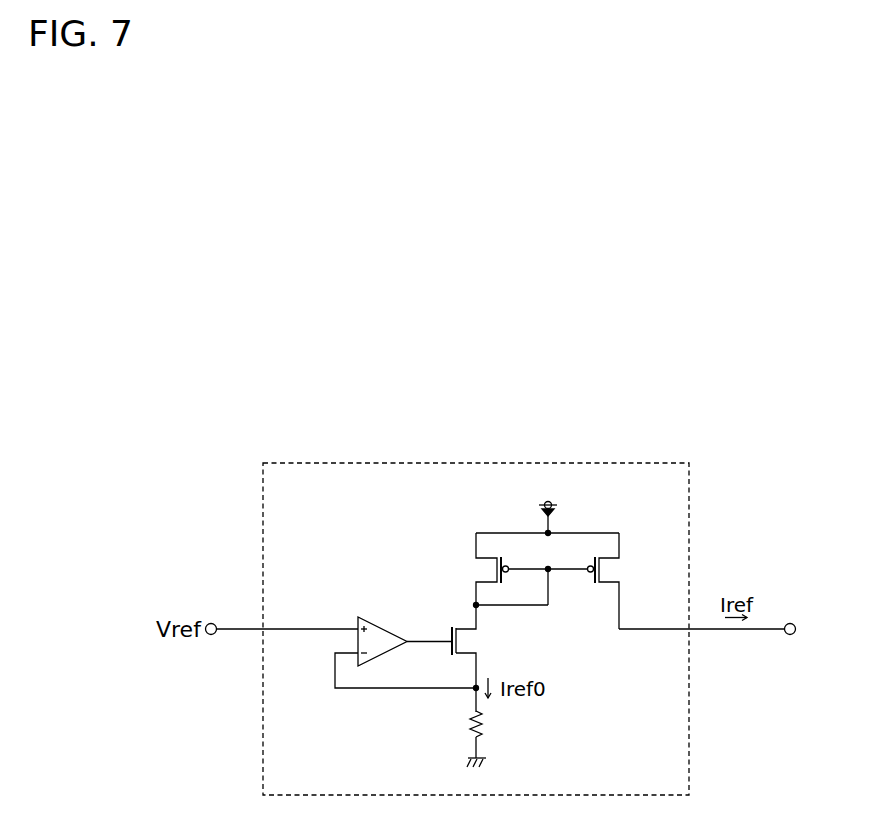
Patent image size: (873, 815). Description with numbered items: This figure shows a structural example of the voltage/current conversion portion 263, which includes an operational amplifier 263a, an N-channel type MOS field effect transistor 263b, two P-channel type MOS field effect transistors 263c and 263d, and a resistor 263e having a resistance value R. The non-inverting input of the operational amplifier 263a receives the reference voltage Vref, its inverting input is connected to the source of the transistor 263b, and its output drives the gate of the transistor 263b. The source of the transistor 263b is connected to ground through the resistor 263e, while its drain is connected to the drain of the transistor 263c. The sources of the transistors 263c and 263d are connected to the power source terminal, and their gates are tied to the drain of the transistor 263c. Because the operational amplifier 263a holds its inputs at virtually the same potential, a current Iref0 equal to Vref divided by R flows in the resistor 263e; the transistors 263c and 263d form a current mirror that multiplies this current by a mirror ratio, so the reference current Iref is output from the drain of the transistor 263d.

The voltage/current conversion portion 263 is at (477, 463).
The operational amplifier 263a is at (386, 623).
The N-channel type MOS field effect transistor 263b is at (477, 643).
The P-channel type MOS field effect transistor 263c is at (477, 571).
The P-channel type MOS field effect transistor 263d is at (614, 571).
The resistor 263e is at (489, 725).